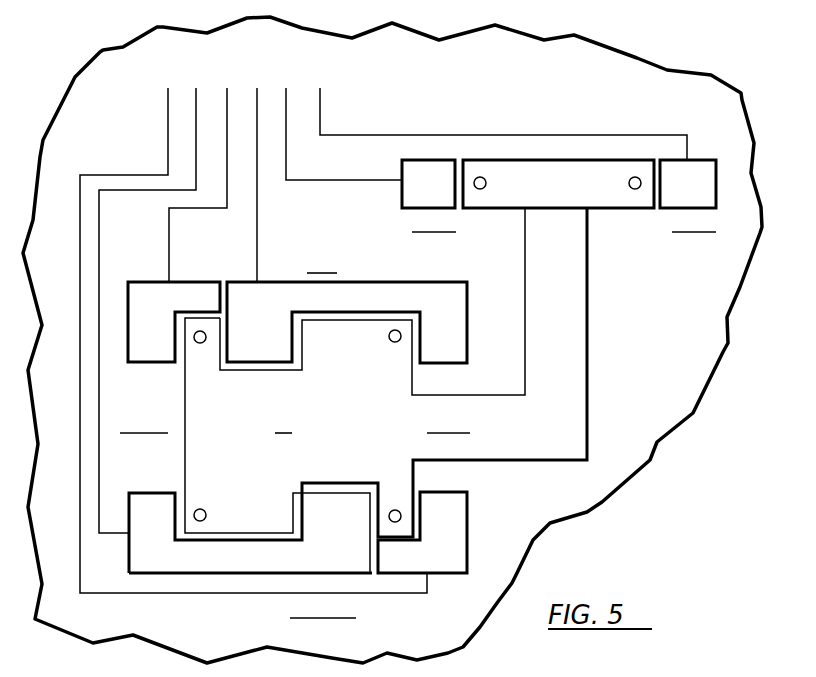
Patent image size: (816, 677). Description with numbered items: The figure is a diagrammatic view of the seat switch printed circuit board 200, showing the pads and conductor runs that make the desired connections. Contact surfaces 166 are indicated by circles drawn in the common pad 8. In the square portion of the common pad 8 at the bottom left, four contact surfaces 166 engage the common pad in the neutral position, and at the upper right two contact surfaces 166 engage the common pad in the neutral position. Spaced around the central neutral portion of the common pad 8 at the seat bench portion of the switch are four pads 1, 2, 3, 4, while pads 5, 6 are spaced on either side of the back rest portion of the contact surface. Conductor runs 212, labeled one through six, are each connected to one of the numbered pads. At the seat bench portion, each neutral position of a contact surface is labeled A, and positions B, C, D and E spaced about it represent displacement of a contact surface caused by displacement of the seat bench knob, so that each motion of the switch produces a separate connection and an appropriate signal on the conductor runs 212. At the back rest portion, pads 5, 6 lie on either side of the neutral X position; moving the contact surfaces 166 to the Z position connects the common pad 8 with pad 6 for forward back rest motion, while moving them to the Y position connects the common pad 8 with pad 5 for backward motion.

The printed circuit board 200 is at (633, 55).
The conductor runs 212 is at (140, 190).
The contact surfaces 166 is at (480, 176).
The common pad 8 is at (418, 341).
The pad 1 is at (176, 249).
The pad 2 is at (358, 341).
The pad 3 is at (314, 318).
The pad 4 is at (348, 249).
The pad 5 is at (368, 148).
The pad 6 is at (557, 160).